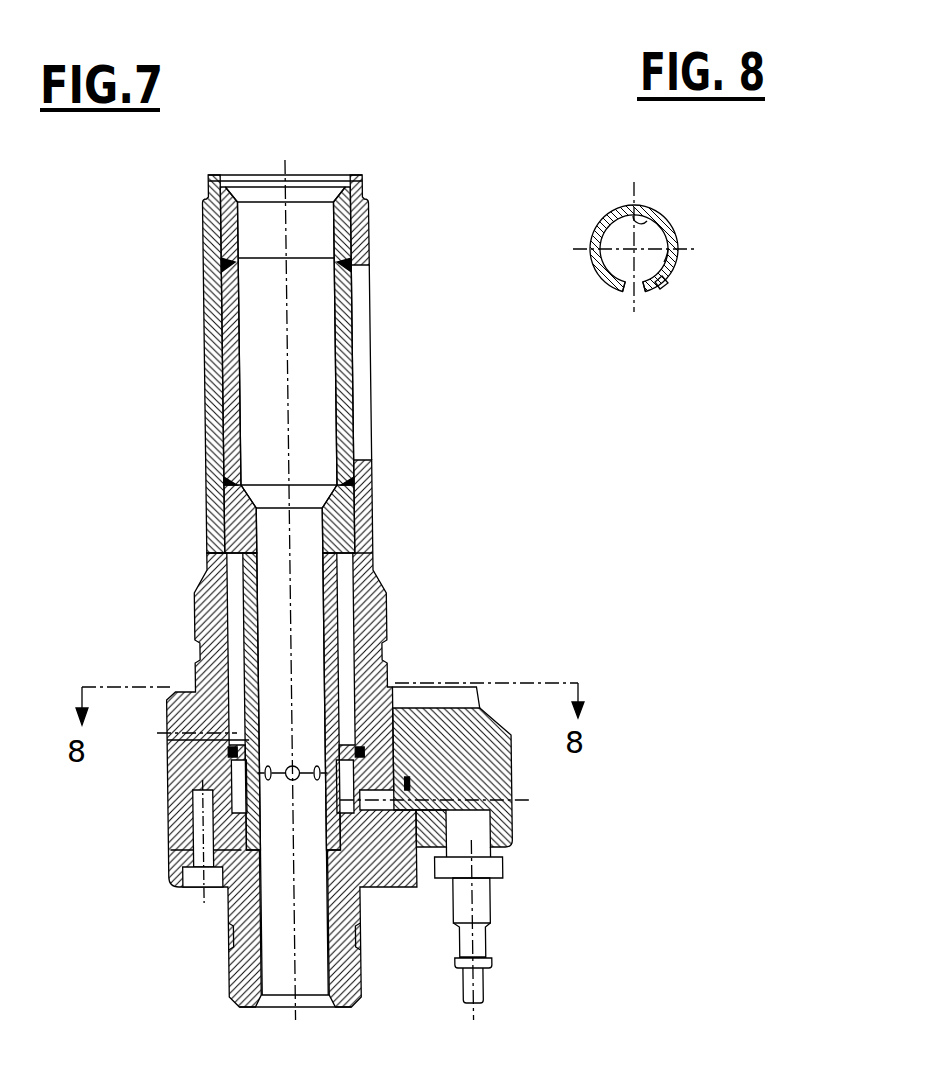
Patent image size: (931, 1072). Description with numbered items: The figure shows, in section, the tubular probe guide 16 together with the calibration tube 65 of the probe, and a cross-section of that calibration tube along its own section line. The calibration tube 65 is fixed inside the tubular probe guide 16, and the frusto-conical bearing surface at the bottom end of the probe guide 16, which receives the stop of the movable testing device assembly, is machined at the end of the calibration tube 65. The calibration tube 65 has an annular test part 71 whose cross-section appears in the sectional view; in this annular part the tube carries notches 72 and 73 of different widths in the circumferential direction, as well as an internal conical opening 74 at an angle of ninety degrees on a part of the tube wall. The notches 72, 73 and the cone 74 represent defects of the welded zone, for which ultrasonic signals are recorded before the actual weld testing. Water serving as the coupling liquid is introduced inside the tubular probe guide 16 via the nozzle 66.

In FIG. 7, the tubular probe guide 16 is at (203, 335).
In FIG. 7, the calibration tube 65 is at (335, 538).
In FIG. 8, the calibration tube 65 is at (592, 225).
In FIG. 7, the annular test part 71 is at (337, 693).
In FIG. 8, the annular test part 71 is at (677, 250).
In FIG. 8, the notch 72 is at (628, 293).
In FIG. 8, the notch 73 is at (665, 280).
In FIG. 8, the internal conical opening 74 is at (658, 213).
In FIG. 7, the nozzle 66 is at (484, 892).